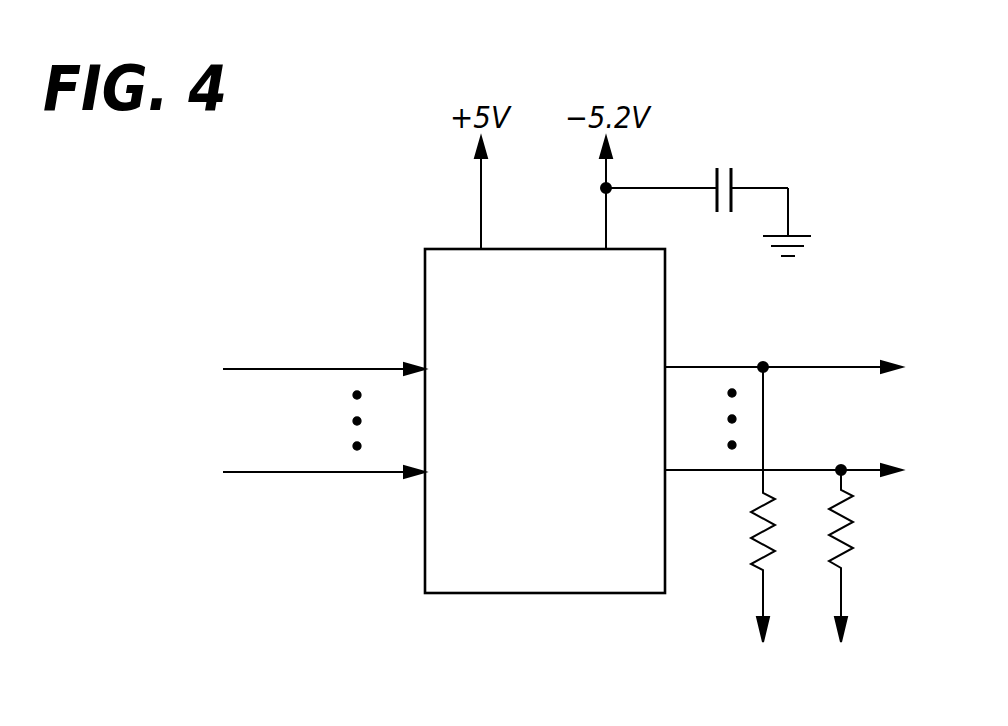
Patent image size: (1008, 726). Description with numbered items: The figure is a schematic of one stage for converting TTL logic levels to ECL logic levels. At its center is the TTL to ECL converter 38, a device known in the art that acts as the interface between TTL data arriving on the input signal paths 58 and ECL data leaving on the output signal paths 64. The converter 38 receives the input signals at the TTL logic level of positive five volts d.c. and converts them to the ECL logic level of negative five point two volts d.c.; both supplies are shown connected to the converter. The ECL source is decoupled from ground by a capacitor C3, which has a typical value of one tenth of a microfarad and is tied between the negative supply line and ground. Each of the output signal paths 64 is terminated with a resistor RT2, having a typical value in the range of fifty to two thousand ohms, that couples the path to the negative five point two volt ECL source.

The TTL to ECL converter 38 is at (665, 313).
The signal paths 58 is at (342, 369).
The signal paths 64 is at (812, 367).
The capacitor C3 is at (752, 160).
The resistor RT2 is at (870, 549).